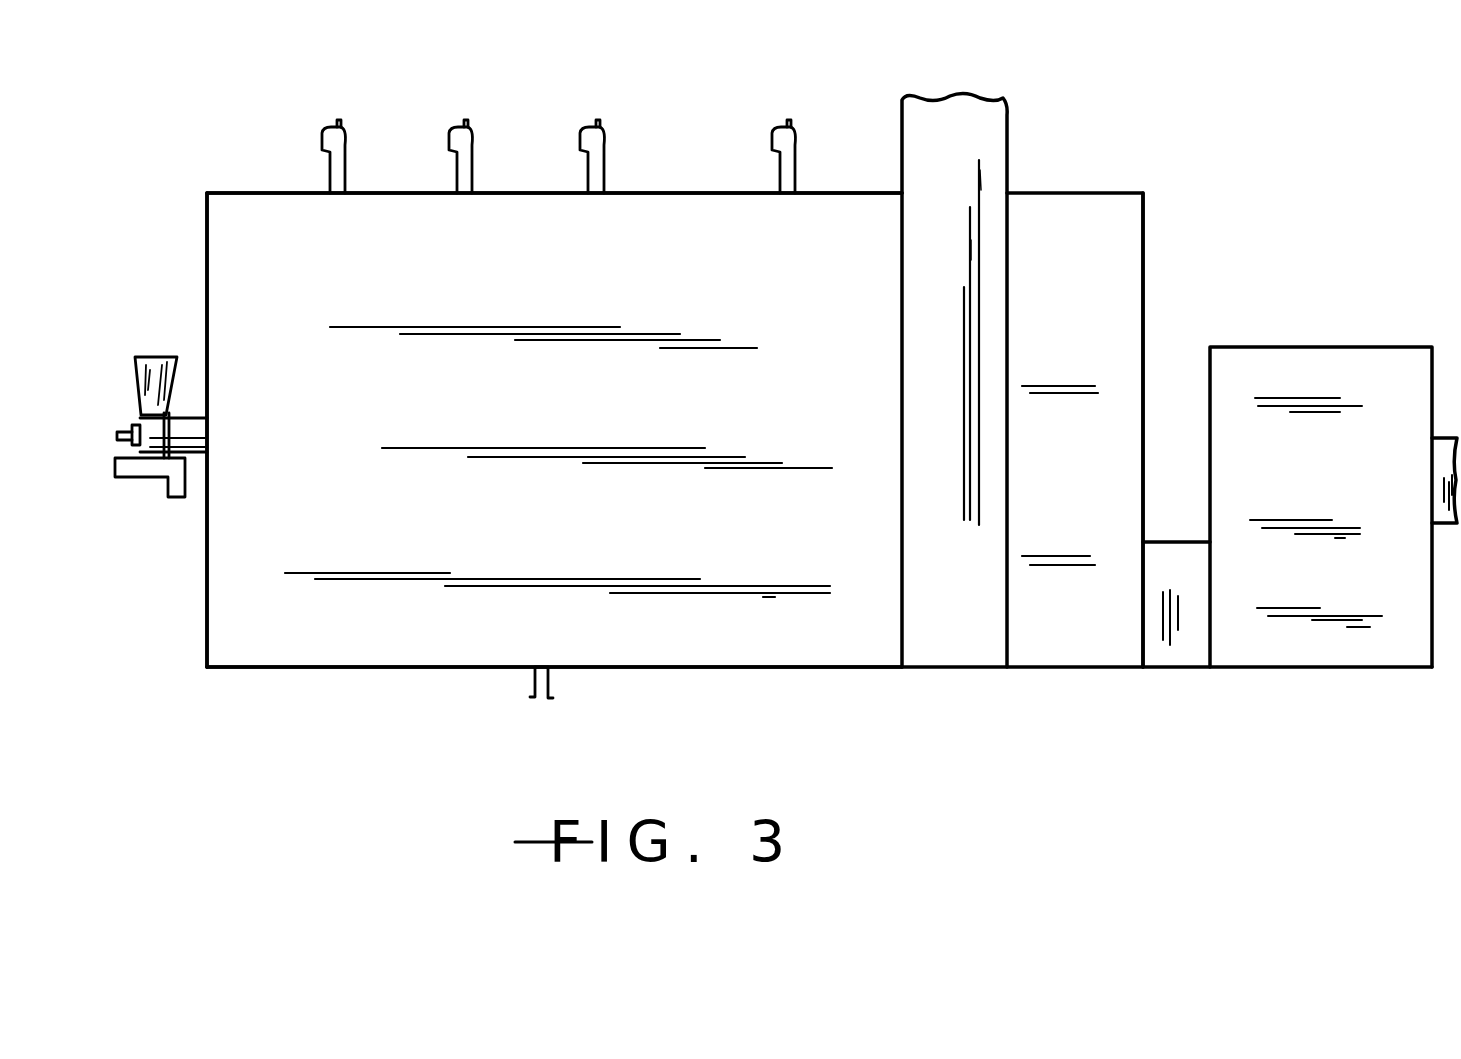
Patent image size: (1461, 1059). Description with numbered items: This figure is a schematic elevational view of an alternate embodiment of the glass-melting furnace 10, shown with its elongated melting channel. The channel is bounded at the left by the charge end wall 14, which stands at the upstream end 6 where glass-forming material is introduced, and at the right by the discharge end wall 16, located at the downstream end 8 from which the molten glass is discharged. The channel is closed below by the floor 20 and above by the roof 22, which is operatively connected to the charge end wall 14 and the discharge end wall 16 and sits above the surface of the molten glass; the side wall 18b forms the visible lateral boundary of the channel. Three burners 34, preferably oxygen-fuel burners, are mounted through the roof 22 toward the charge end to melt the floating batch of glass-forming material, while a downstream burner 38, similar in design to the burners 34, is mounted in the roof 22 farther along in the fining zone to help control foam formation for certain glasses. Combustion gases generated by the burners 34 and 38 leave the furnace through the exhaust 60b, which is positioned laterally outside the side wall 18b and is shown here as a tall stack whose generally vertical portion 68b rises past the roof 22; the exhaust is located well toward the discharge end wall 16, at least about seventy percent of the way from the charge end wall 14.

The upstream end 6 is at (268, 678).
The downstream end 8 is at (1087, 682).
The glass-melting furnace 10 is at (490, 702).
The charge end wall 14 is at (207, 270).
The discharge end wall 16 is at (1143, 322).
The side wall 18b is at (314, 504).
The floor 20 is at (647, 673).
The roof 22 is at (230, 193).
The burners 34 is at (342, 198).
The downstream burner 38 is at (790, 198).
The exhaust 60b is at (1008, 152).
The generally vertical portion 68b is at (1008, 360).